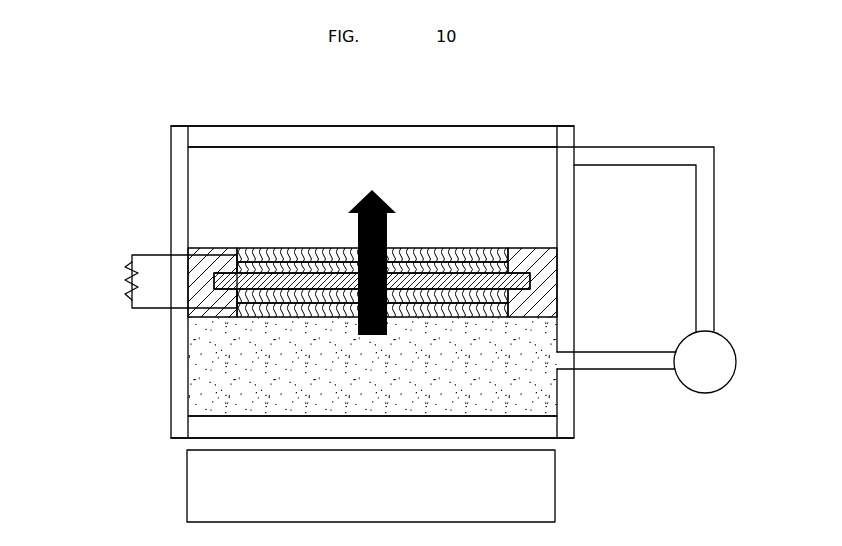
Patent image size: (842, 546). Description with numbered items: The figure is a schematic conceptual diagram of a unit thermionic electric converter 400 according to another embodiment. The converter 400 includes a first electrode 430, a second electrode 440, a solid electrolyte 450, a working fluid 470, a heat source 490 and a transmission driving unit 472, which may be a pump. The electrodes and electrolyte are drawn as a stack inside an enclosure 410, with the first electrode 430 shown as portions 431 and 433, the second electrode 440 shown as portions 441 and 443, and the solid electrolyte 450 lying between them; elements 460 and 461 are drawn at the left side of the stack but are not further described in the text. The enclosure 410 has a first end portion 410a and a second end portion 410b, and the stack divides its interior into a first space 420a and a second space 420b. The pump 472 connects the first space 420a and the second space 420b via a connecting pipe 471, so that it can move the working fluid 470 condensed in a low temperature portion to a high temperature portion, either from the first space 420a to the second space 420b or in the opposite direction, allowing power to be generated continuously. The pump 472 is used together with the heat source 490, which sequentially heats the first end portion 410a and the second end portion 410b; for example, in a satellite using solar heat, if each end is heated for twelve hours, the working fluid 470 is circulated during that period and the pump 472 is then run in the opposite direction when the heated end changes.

The unit thermionic electric converter 400 is at (719, 68).
The housing 410 is at (575, 136).
The first end portion 410a is at (525, 126).
The second end portion 410b is at (523, 438).
The first space 420a is at (536, 195).
The second space 420b is at (523, 379).
The first electrode 430 is at (638, 219).
The first electrode layer 431 is at (508, 254).
The first catalyst layer 433 is at (508, 267).
The second electrode 440 is at (638, 313).
The second electrode layer 441 is at (508, 310).
The second catalyst layer 443 is at (508, 296).
The solid electrolyte 450 is at (530, 281).
The power supply terminal 460 is at (132, 308).
The resistor element 461 is at (125, 280).
The working fluid 470 is at (510, 396).
The connecting pipe 471 is at (714, 254).
The transmission driving unit 472 is at (705, 393).
The heat source 490 is at (547, 500).